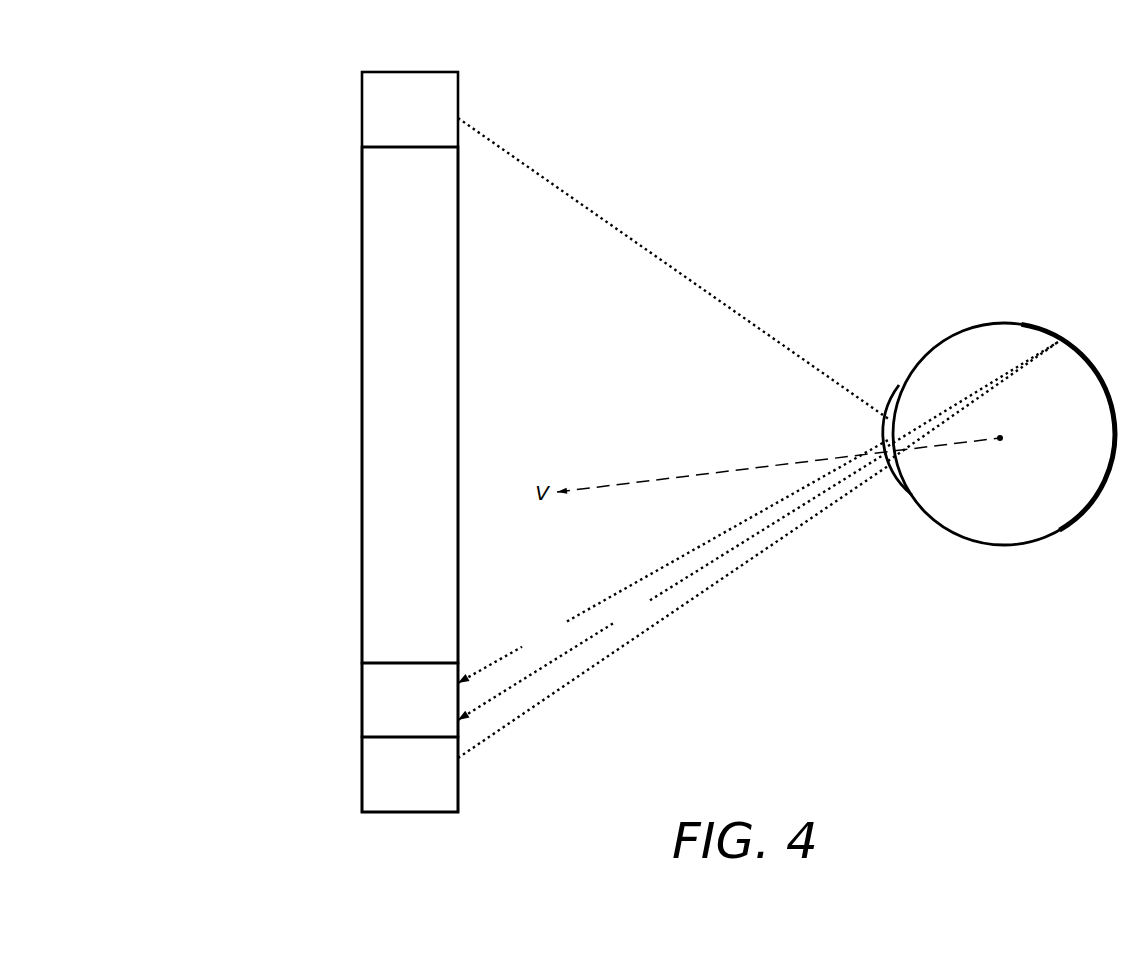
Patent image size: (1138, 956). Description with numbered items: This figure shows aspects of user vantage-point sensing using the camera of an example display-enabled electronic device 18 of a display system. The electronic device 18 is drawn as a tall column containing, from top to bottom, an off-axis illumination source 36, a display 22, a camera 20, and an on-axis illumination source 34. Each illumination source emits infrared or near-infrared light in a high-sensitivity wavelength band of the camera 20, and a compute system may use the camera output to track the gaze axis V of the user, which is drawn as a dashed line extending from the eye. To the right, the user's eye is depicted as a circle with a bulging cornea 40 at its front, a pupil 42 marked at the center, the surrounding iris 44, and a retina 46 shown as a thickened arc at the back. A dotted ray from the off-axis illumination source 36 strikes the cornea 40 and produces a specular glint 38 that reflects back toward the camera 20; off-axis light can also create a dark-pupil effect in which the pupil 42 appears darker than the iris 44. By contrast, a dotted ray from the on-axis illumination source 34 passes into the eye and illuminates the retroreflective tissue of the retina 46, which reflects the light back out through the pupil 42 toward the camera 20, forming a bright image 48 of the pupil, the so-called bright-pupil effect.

The electronic device 18 is at (225, 90).
The off-axis illumination source 36 is at (398, 118).
The display 22 is at (398, 413).
The camera 20 is at (398, 710).
The on-axis illumination source 34 is at (398, 784).
The specular glint 38 is at (673, 561).
The bright image of the pupil 48 is at (673, 586).
The cornea 40 is at (892, 476).
The pupil 42 is at (912, 457).
The iris 44 is at (900, 472).
The retina 46 is at (1097, 382).